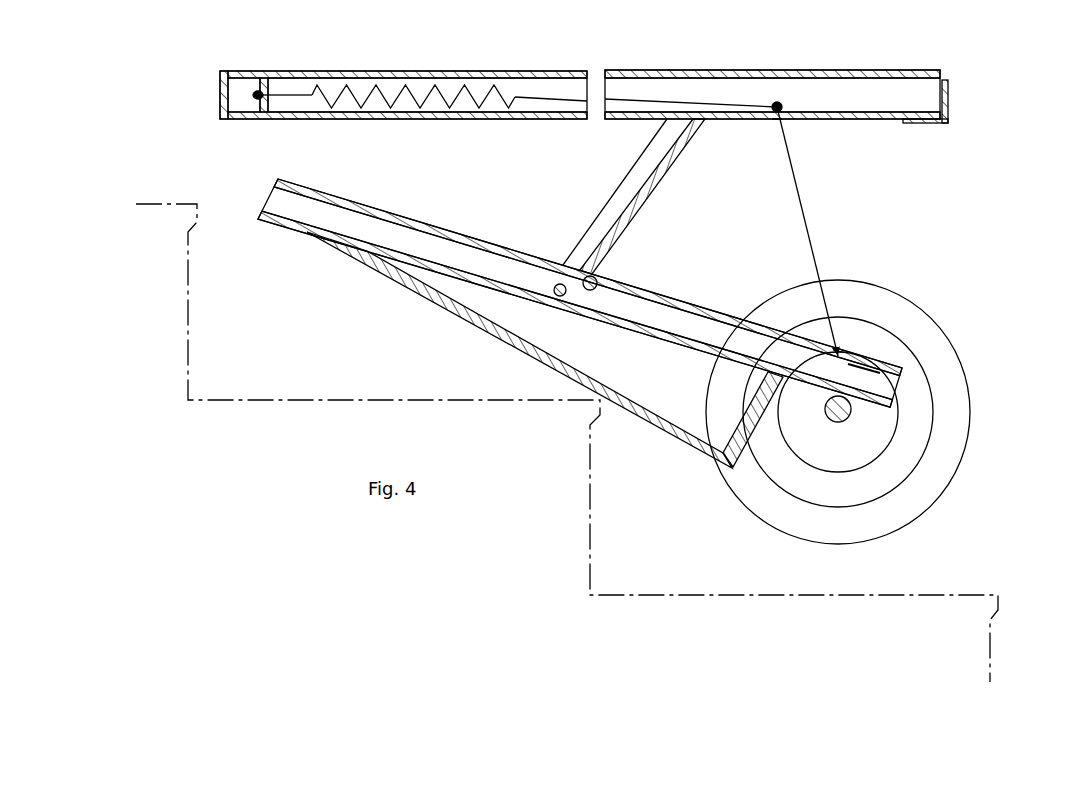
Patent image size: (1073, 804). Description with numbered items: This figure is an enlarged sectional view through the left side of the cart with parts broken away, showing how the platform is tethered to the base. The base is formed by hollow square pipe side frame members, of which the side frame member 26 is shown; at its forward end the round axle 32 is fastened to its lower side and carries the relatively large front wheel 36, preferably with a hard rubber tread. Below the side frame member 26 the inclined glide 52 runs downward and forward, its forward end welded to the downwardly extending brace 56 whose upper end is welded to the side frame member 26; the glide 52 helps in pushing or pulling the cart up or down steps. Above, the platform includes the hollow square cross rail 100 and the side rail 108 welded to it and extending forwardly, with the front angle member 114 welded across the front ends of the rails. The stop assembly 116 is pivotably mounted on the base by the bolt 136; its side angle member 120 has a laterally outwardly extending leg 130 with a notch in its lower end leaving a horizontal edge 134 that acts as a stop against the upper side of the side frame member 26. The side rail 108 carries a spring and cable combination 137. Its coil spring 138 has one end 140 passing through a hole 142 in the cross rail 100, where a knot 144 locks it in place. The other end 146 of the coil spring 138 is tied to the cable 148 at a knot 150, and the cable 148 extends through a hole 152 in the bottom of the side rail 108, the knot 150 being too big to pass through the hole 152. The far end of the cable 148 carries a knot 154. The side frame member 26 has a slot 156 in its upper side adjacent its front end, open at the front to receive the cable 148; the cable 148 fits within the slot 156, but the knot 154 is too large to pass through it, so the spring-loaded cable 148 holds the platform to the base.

The side frame member 26 is at (690, 300).
The axle 32 is at (853, 415).
The front wheel 36 is at (897, 295).
The glide 52 is at (520, 353).
The brace 56 is at (780, 377).
The cross rail 100 is at (241, 72).
The side rail 108 is at (528, 71).
The front angle member 114 is at (949, 100).
The stop assembly 116 is at (632, 196).
The side angle member 120 is at (655, 198).
The laterally outwardly extending leg 130 is at (647, 170).
The horizontal edge 134 is at (603, 278).
The bolt 136 is at (558, 284).
The spring and cable combination 137 is at (391, 97).
The coil spring 138 is at (473, 102).
The spring end 140 is at (266, 94).
The hole 142 is at (263, 93).
The knot 144 is at (253, 95).
The other spring end 146 is at (775, 106).
The cable 148 is at (808, 210).
The knot 150 is at (778, 106).
The hole 152 is at (781, 116).
The knot 154 is at (845, 358).
The slot 156 is at (887, 364).